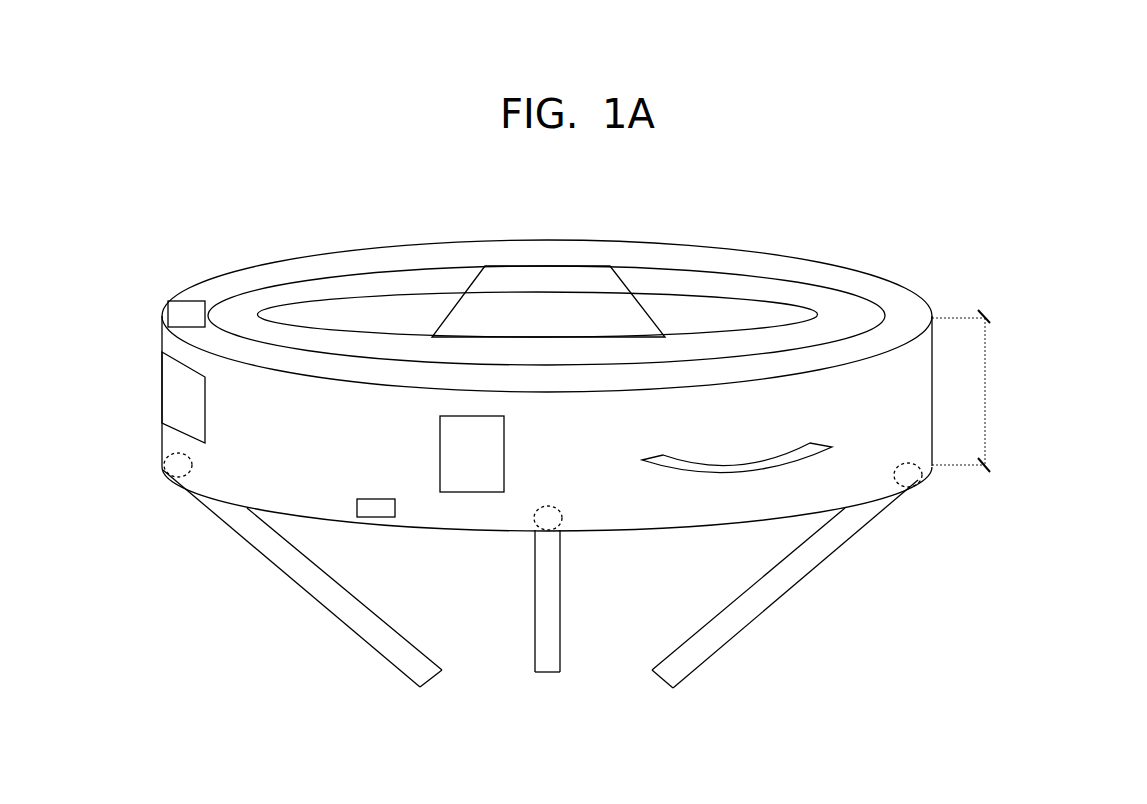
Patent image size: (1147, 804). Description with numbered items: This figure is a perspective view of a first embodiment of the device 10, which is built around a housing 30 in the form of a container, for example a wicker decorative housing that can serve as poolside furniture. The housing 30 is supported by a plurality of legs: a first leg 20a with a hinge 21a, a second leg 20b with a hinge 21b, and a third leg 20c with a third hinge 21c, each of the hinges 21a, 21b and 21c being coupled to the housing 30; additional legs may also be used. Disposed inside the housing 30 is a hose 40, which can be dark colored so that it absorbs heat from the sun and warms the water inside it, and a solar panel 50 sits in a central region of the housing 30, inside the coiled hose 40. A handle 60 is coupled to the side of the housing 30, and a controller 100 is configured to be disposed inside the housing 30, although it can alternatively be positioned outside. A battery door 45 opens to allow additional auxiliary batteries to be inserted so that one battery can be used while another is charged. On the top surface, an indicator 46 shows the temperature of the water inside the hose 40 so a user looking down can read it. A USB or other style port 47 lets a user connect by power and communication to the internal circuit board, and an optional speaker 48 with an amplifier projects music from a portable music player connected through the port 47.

The device 10 is at (793, 245).
The hose 40 is at (305, 302).
The solar panel 50 is at (510, 302).
The indicator 46 is at (168, 300).
The battery door 45 is at (170, 382).
The speaker 48 is at (467, 465).
The USB or other style port 47 is at (385, 508).
The handle 60 is at (752, 470).
The hinge 21a is at (165, 466).
The hinge 21b is at (535, 520).
The third hinge 21c is at (921, 478).
The first leg 20a is at (310, 600).
The second leg 20b is at (528, 603).
The third leg 20c is at (752, 623).
The housing 30 is at (262, 410).
The controller 100 is at (968, 417).